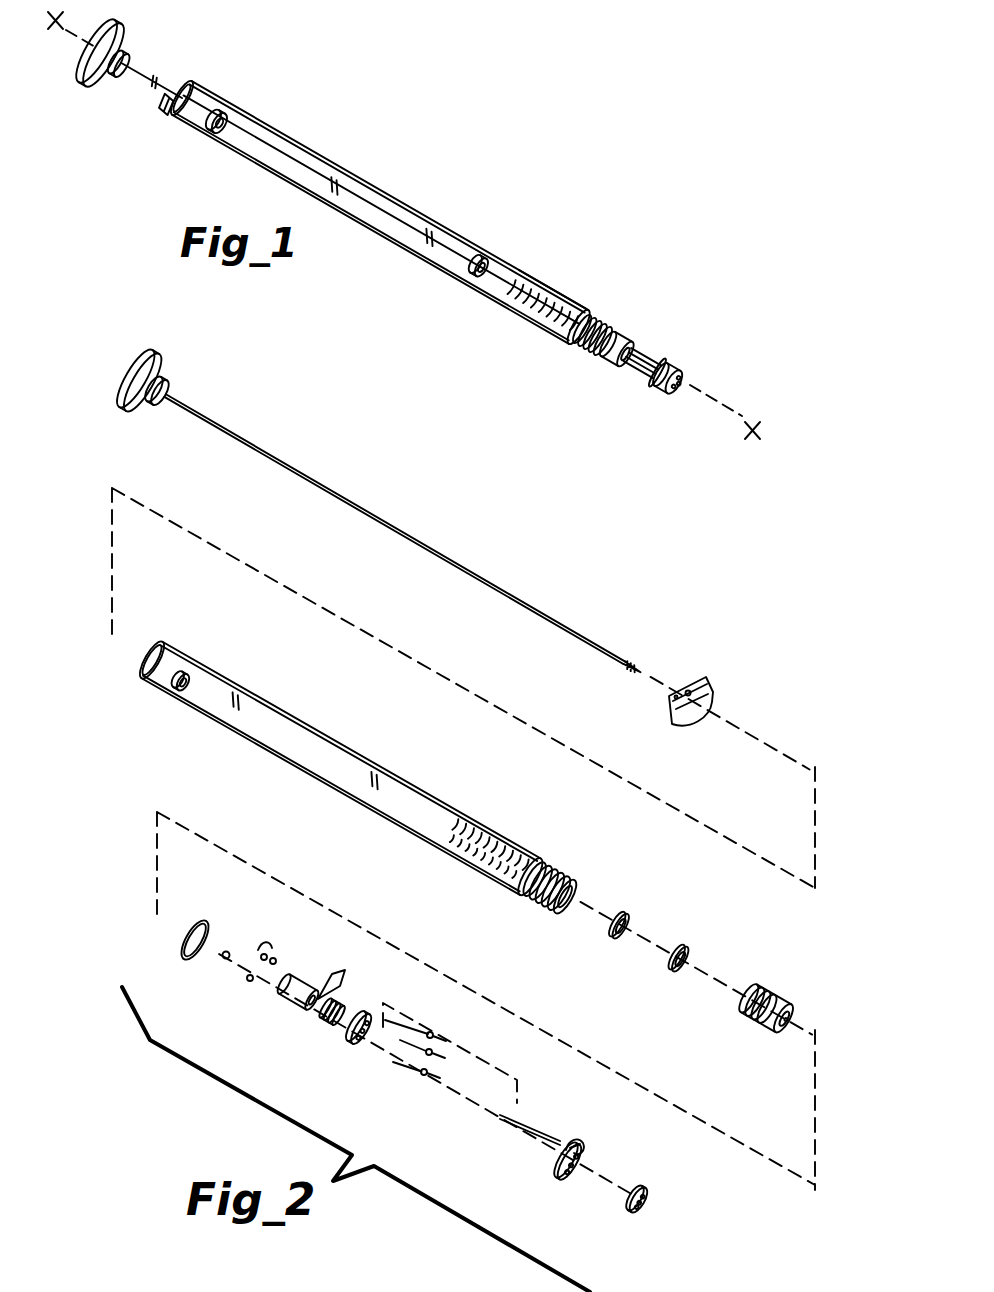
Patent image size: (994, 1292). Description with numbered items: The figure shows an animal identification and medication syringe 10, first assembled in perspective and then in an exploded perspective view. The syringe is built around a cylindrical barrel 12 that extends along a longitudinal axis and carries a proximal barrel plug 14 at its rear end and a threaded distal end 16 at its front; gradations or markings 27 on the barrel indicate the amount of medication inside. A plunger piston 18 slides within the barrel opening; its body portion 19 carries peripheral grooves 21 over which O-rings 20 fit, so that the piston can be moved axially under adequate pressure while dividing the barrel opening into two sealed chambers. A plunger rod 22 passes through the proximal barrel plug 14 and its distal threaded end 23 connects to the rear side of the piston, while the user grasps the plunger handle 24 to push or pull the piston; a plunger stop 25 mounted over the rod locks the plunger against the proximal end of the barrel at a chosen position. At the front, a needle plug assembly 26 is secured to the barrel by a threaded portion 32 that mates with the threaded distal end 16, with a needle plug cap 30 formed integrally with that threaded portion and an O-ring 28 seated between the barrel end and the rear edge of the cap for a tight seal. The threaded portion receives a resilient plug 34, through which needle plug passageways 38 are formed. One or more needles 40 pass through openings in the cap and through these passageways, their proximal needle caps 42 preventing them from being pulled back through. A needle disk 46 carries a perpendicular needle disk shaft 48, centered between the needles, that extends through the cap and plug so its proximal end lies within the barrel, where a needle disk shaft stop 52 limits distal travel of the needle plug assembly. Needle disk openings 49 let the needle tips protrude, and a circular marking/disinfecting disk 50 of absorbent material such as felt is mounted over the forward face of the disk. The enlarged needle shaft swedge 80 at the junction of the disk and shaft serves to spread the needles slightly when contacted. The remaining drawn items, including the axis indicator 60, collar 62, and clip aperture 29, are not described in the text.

In FIG. 1, the tool assembly 10 is at (440, 172).
In FIG. 1, the cylindrical barrel 12 is at (337, 168).
In FIG. 2, the cylindrical barrel 12 is at (333, 740).
In FIG. 1, the proximal barrel plug 14 is at (204, 104).
In FIG. 2, the proximal barrel plug 14 is at (170, 669).
In FIG. 1, the threaded distal end 16 is at (606, 332).
In FIG. 2, the threaded distal end 16 is at (557, 868).
In FIG. 1, the plunger piston 18 is at (512, 282).
In FIG. 2, the plunger piston 18 is at (805, 968).
In FIG. 2, the body portion 19 is at (780, 1022).
In FIG. 2, the O-rings 20 is at (617, 912).
In FIG. 2, the peripheral grooves 21 is at (797, 955).
In FIG. 1, the plunger rod 22 is at (443, 252).
In FIG. 2, the plunger rod 22 is at (274, 456).
In FIG. 2, the distal threaded end 23 is at (635, 660).
In FIG. 1, the plunger handle 24 is at (120, 24).
In FIG. 2, the plunger handle 24 is at (152, 355).
In FIG. 1, the plunger stop 25 is at (158, 108).
In FIG. 2, the plunger stop 25 is at (700, 688).
In FIG. 1, the needle plug assembly 26 is at (650, 336).
In FIG. 2, the needle plug assembly 26 is at (350, 992).
In FIG. 1, the gradations or markings 27 is at (546, 282).
In FIG. 2, the gradations or markings 27 is at (480, 834).
In FIG. 2, the O-ring 28 is at (215, 889).
In FIG. 2, the aperture 29 is at (688, 692).
In FIG. 2, the needle plug cap 30 is at (338, 1040).
In FIG. 2, the threaded portion 32 is at (320, 1025).
In FIG. 2, the resilient plug 34 is at (284, 1000).
In FIG. 2, the needle plug passageways 38 is at (324, 990).
In FIG. 1, the needles 40 is at (667, 352).
In FIG. 2, the needles 40 is at (426, 1031).
In FIG. 2, the needle caps 42 is at (266, 955).
In FIG. 1, the needle disk/pressure reacting member 46 is at (648, 392).
In FIG. 2, the needle disk/pressure reacting member 46 is at (563, 1176).
In FIG. 2, the needle disk shaft 48 is at (530, 1140).
In FIG. 2, the needle disk openings 49 is at (573, 1150).
In FIG. 1, the marking/disinfecting disk 50 is at (678, 372).
In FIG. 2, the marking/disinfecting disk 50 is at (635, 1212).
In FIG. 2, the needle disk shaft stop 52 is at (227, 948).
In FIG. 1, the markings 60 is at (541, 281).
In FIG. 1, the collar 62 is at (500, 207).
In FIG. 2, the needle shaft swedge 80 is at (560, 1147).